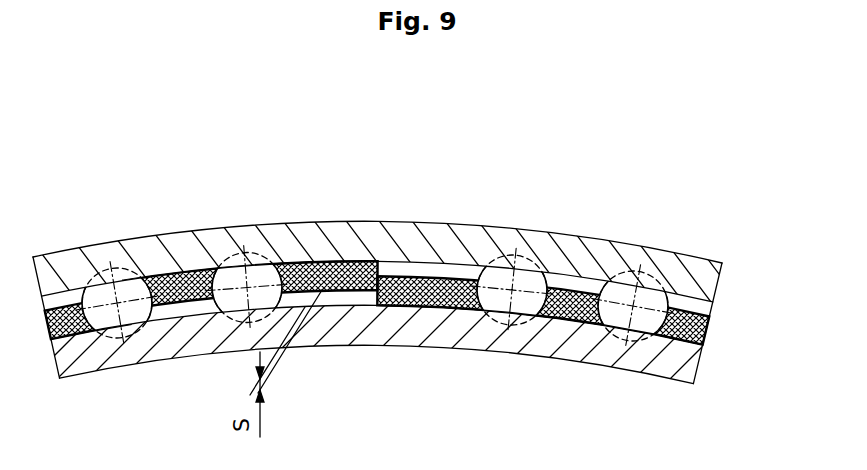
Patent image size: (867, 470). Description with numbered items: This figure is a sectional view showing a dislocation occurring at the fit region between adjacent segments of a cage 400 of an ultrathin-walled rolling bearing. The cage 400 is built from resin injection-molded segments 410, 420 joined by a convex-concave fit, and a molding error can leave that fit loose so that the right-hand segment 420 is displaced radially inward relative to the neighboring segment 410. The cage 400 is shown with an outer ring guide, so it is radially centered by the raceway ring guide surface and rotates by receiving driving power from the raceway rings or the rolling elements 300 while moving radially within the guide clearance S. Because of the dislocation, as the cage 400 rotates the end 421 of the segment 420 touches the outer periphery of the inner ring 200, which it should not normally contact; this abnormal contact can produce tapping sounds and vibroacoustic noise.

The inner ring 200 is at (702, 372).
The rolling elements 300 is at (524, 256).
The cage 400 is at (714, 333).
The segment 410 is at (331, 299).
The segment 420 is at (442, 292).
The end of segment 421 is at (396, 308).